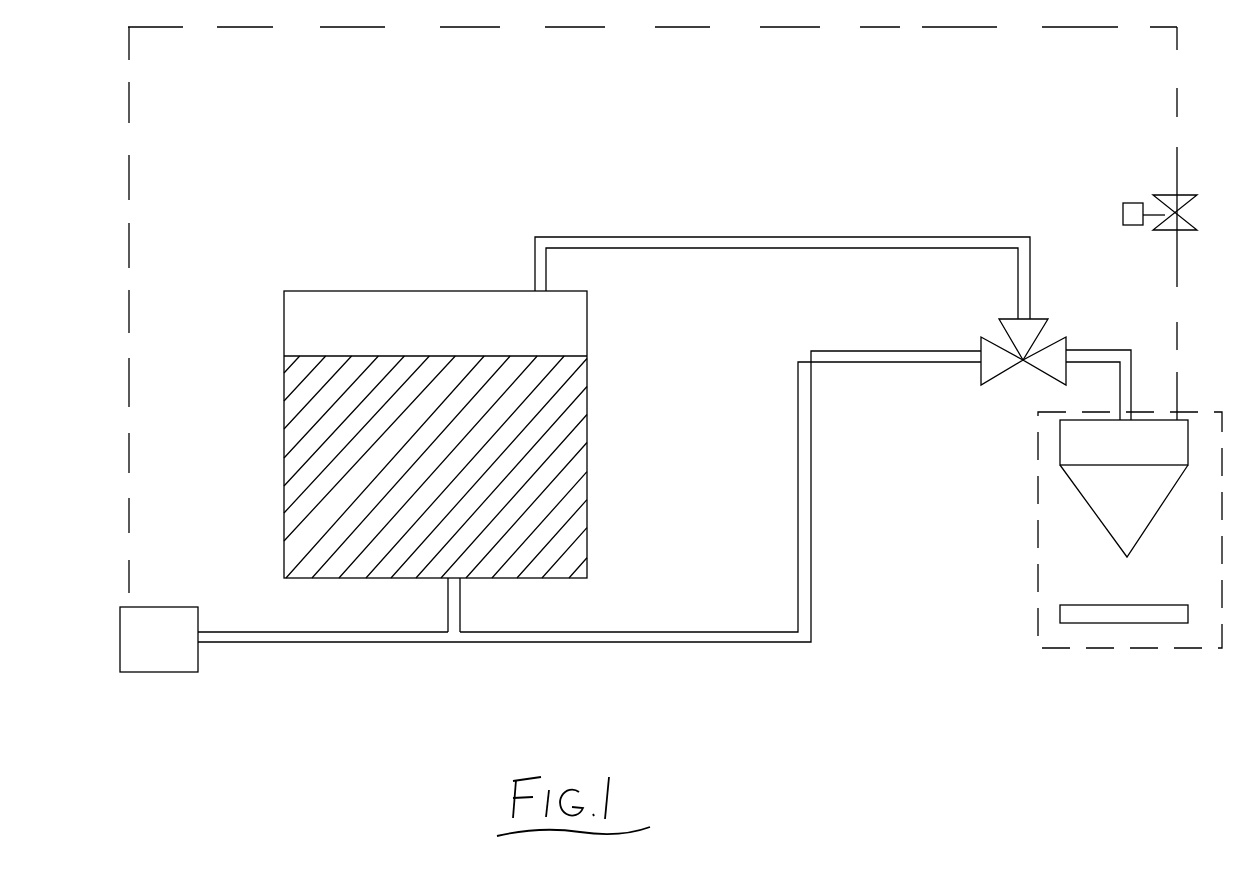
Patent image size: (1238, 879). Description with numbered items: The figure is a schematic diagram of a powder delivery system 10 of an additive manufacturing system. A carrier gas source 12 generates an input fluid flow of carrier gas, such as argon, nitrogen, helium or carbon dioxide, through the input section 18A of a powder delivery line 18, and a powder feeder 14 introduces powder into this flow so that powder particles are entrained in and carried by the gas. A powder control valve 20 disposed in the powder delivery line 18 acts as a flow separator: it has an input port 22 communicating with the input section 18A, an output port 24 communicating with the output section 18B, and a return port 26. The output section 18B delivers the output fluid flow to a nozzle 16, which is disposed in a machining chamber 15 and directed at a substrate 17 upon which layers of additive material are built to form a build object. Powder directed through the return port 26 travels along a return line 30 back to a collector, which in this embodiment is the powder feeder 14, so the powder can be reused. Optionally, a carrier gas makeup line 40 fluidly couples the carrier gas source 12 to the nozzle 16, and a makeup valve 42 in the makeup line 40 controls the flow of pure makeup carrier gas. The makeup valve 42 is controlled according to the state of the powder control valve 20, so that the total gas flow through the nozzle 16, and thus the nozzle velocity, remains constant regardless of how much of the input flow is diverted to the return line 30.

The powder delivery system 10 is at (424, 168).
The carrier gas source 12 is at (160, 607).
The powder feeder 14 is at (437, 291).
The machining chamber 15 is at (1037, 625).
The nozzle 16 is at (1095, 515).
The substrate 17 is at (1165, 607).
The powder delivery line 18 is at (628, 645).
The input section 18A is at (400, 645).
The output section 18B is at (1122, 350).
The powder control valve 20 is at (980, 379).
The input port 22 is at (979, 348).
The output port 24 is at (1068, 345).
The return port 26 is at (1019, 366).
The return line 30 is at (748, 235).
The carrier gas makeup line 40 is at (133, 176).
The makeup valve 42 is at (1170, 195).